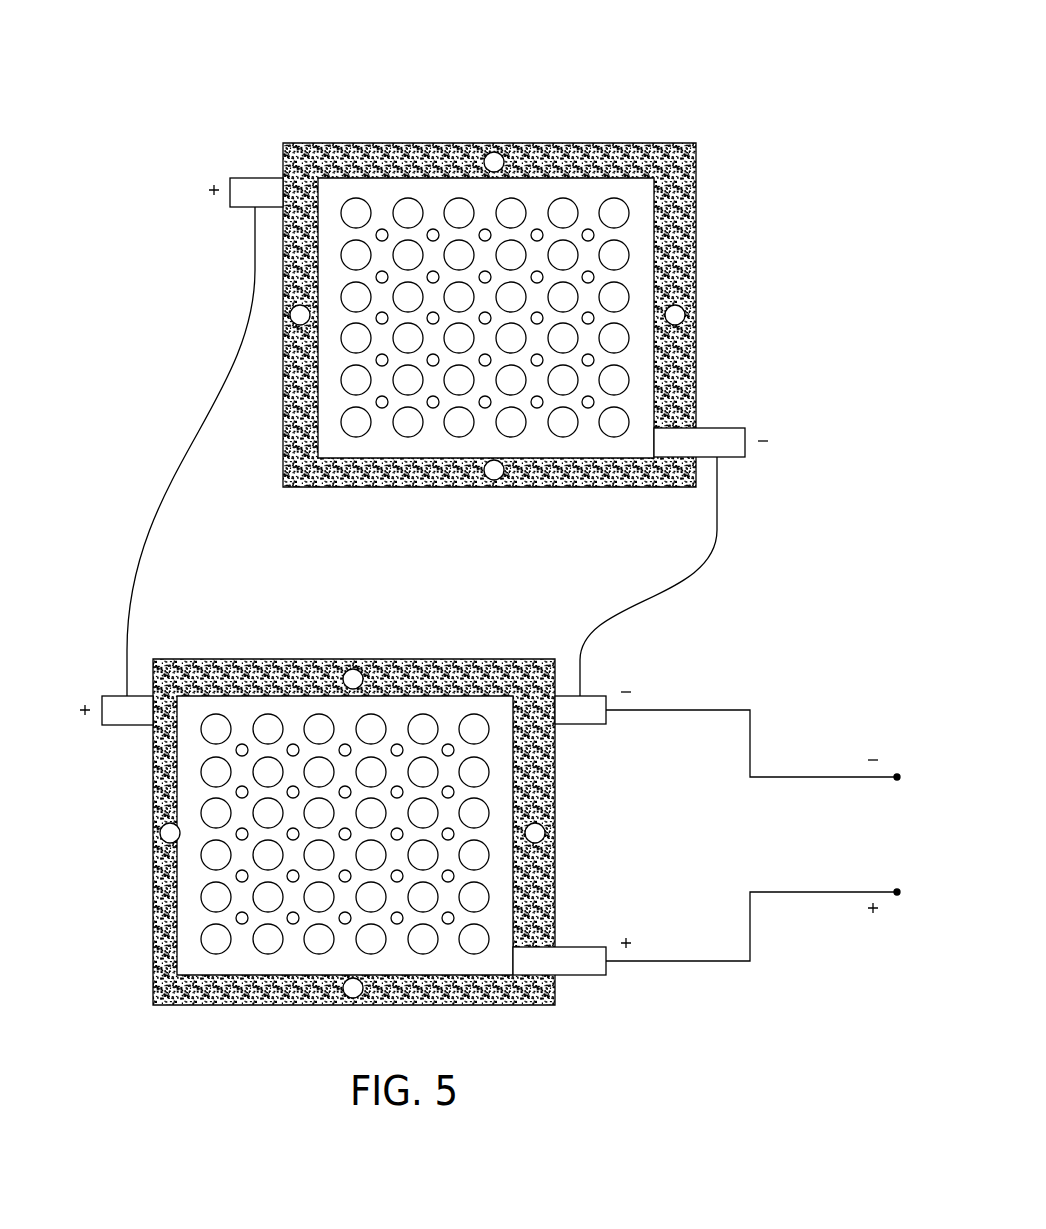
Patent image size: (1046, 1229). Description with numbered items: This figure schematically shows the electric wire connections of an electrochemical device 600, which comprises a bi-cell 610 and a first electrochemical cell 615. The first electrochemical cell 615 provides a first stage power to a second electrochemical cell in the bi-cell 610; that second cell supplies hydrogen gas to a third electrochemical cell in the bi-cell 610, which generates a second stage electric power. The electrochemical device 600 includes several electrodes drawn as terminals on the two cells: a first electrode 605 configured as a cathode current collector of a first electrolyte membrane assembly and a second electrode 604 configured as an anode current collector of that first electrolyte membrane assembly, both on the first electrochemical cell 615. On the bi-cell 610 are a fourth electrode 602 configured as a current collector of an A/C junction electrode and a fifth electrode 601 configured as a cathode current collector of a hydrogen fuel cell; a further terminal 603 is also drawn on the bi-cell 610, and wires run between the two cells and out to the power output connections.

The electrochemical device 600 is at (182, 48).
The fifth electrode 601 is at (584, 997).
The fourth electrode 602 is at (584, 745).
The positive terminal connecting lower cell to upper cell 603 is at (122, 745).
The second electrode 604 is at (742, 428).
The first electrode 605 is at (253, 178).
The bi-cell 610 is at (134, 974).
The first electrochemical cell 615 is at (580, 112).